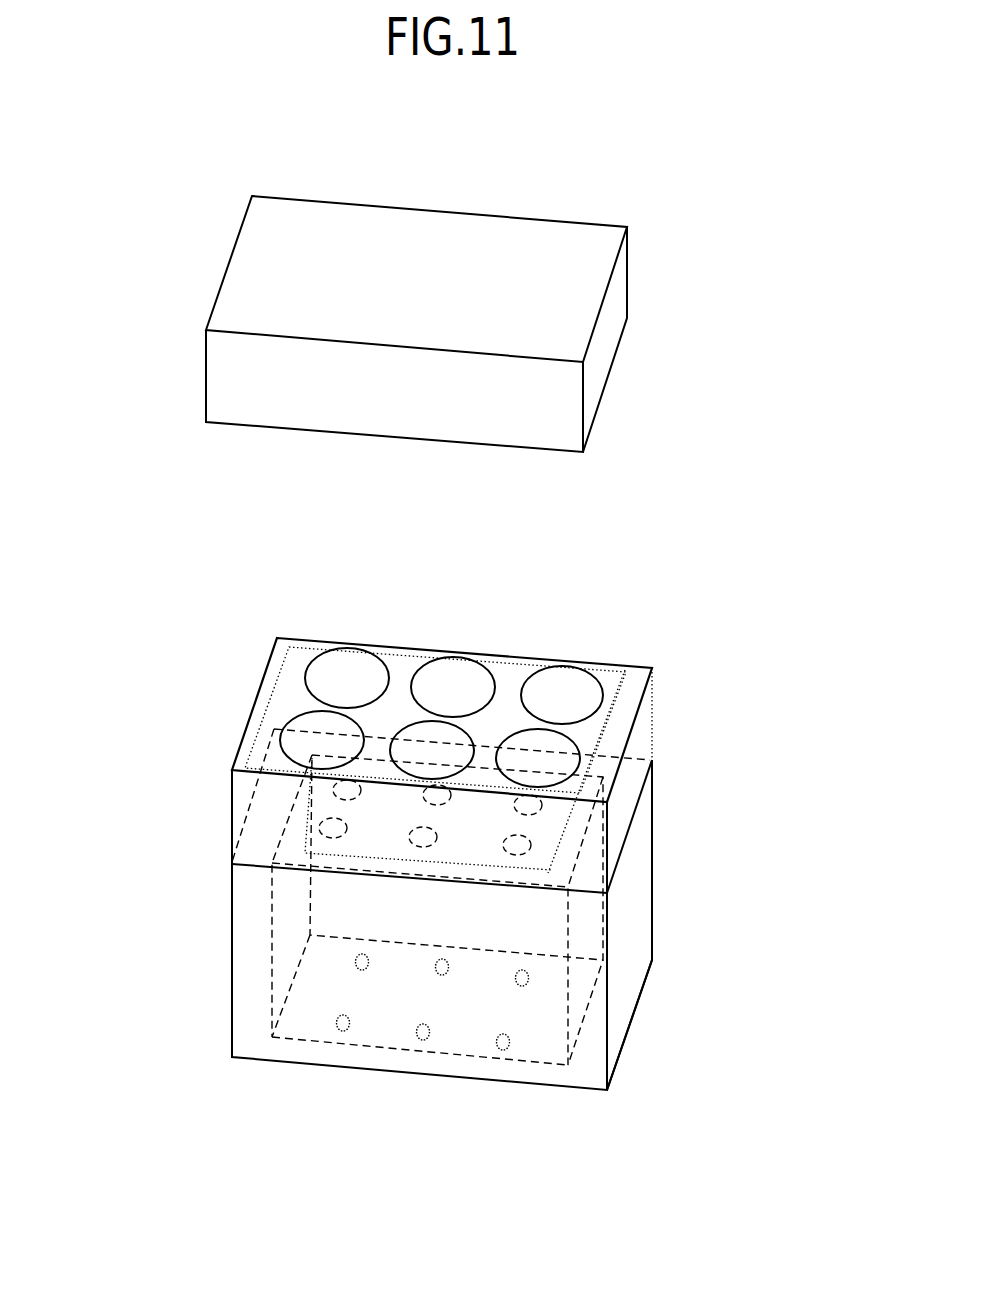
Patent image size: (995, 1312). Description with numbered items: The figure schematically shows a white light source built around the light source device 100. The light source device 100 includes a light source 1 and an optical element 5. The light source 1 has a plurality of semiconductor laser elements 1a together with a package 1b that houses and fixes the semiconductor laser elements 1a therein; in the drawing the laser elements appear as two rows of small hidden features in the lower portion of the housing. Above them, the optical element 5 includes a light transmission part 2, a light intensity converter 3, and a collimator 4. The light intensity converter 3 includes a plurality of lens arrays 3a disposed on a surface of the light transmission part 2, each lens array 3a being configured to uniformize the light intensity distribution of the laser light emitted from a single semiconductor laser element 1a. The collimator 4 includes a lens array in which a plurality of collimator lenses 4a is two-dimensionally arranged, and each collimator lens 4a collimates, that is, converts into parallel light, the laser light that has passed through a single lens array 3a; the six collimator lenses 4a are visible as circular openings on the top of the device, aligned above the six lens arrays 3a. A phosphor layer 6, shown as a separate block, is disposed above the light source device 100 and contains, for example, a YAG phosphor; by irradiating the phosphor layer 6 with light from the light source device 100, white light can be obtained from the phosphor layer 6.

The light source device 100 is at (233, 637).
The light source 1 is at (645, 985).
The semiconductor laser element 1a is at (353, 962).
The package 1b is at (637, 910).
The light transmission part 2 is at (265, 802).
The light intensity converter 3 is at (303, 825).
The lens array 3a is at (345, 788).
The collimator 4 is at (622, 693).
The collimator lens 4a is at (355, 675).
The optical element 5 is at (655, 717).
The phosphor layer 6 is at (552, 318).